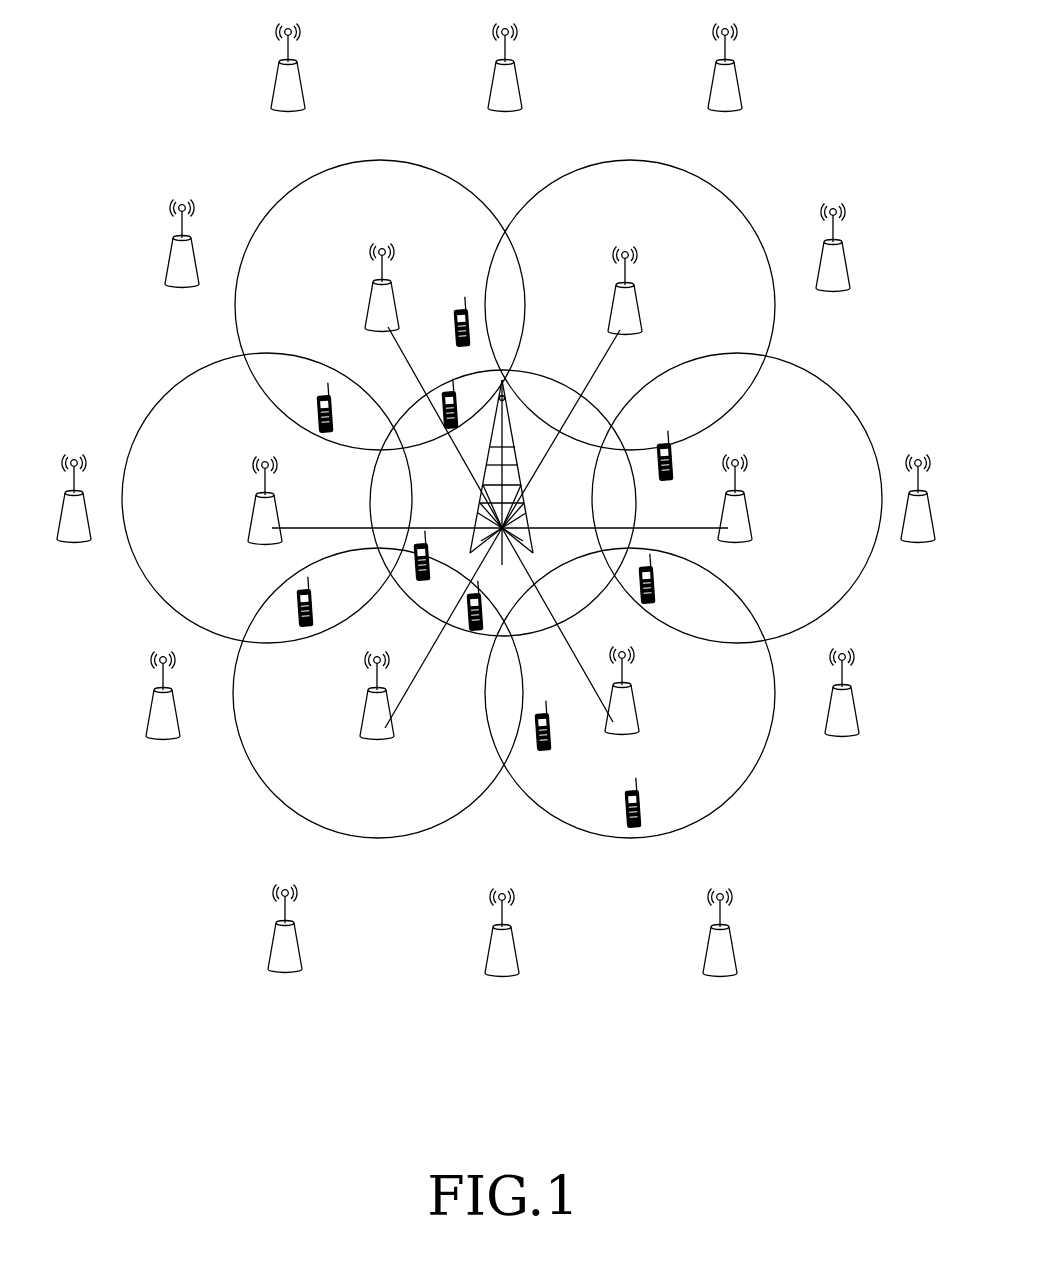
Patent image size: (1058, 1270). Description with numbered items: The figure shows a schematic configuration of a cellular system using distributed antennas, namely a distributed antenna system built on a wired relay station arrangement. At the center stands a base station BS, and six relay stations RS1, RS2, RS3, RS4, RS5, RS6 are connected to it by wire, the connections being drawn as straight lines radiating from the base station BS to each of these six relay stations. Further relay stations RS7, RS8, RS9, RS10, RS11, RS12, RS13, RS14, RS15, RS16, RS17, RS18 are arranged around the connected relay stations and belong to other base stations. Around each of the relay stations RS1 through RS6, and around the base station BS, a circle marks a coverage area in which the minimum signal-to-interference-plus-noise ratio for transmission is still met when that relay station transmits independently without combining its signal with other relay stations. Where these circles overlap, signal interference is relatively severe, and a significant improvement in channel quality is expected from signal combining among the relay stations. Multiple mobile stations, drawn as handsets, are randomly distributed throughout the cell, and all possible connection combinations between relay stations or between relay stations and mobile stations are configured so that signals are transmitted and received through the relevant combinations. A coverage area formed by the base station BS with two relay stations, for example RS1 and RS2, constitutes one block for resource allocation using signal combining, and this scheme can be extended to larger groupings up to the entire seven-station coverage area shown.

The base station BS is at (500, 527).
The relay station RS1 is at (736, 512).
The relay station RS2 is at (628, 304).
The relay station RS3 is at (378, 302).
The relay station RS4 is at (264, 512).
The relay station RS5 is at (378, 709).
The relay station RS6 is at (621, 704).
The relay station RS7 is at (919, 511).
The relay station RS8 is at (834, 261).
The relay station RS9 is at (726, 82).
The relay station RS10 is at (505, 82).
The relay station RS11 is at (288, 82).
The relay station RS12 is at (182, 258).
The relay station RS13 is at (74, 511).
The relay station RS14 is at (165, 709).
The relay station RS15 is at (287, 943).
The relay station RS16 is at (503, 945).
The relay station RS17 is at (723, 946).
The relay station RS18 is at (843, 706).